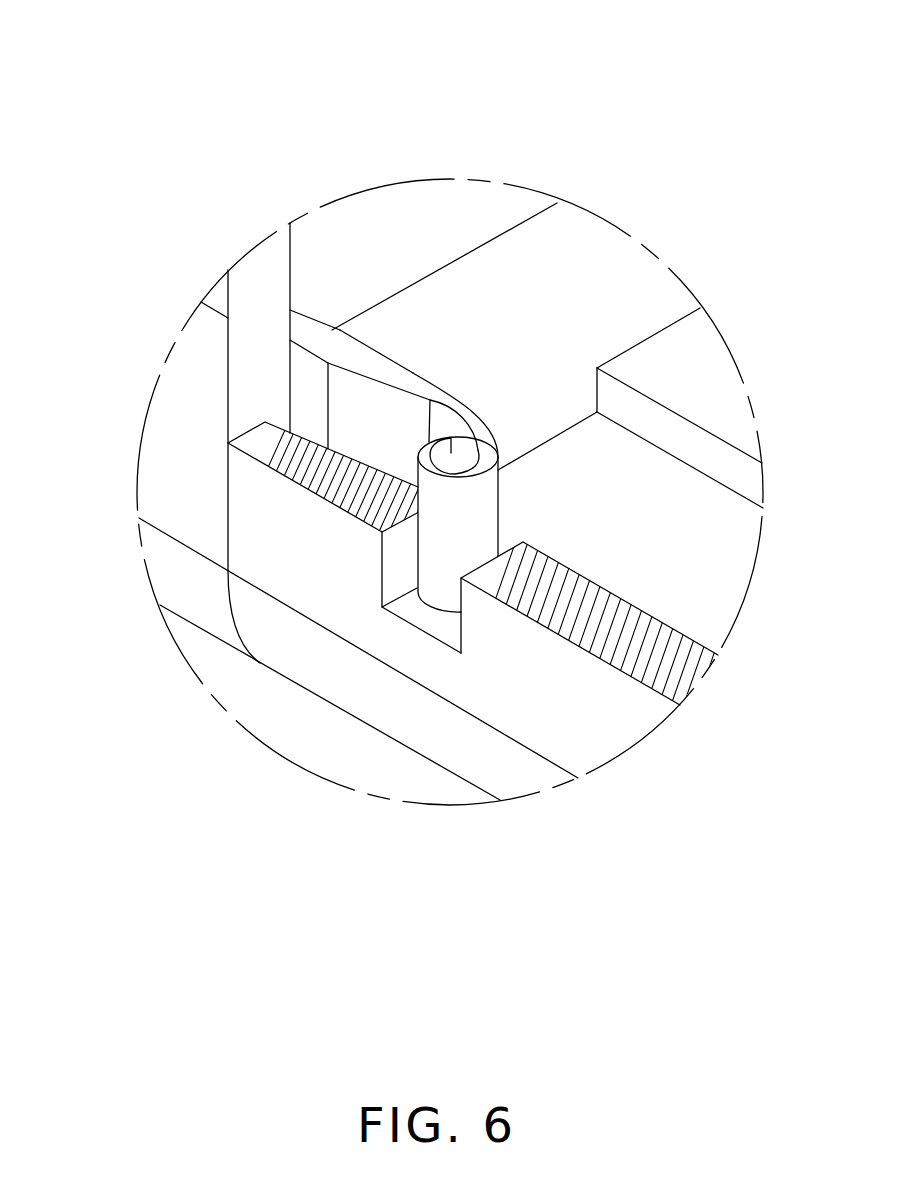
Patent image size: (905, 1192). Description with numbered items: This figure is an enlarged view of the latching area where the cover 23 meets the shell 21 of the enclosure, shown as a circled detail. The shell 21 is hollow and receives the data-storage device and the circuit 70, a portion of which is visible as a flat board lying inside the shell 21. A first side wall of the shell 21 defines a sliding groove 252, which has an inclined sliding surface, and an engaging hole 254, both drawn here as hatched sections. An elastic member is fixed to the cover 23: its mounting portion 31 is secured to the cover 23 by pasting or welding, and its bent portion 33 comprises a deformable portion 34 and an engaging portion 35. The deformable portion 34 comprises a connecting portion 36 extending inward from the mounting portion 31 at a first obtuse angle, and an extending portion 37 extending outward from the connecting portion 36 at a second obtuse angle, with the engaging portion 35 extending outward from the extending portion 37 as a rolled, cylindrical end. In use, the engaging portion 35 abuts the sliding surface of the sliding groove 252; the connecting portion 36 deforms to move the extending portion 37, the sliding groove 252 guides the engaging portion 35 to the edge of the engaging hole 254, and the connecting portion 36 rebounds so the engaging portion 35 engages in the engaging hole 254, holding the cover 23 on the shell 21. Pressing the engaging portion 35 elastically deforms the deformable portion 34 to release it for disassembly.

The shell 21 is at (302, 652).
The cover 23 is at (257, 303).
The sliding groove 252 is at (360, 447).
The engaging hole 254 is at (447, 630).
The mounting portion 31 is at (305, 330).
The bent portion 33 is at (447, 63).
The deformable portion 34 is at (408, 116).
The engaging portion 35 is at (473, 512).
The connecting portion 36 is at (383, 372).
The extending portion 37 is at (457, 408).
The circuit 70 is at (713, 382).